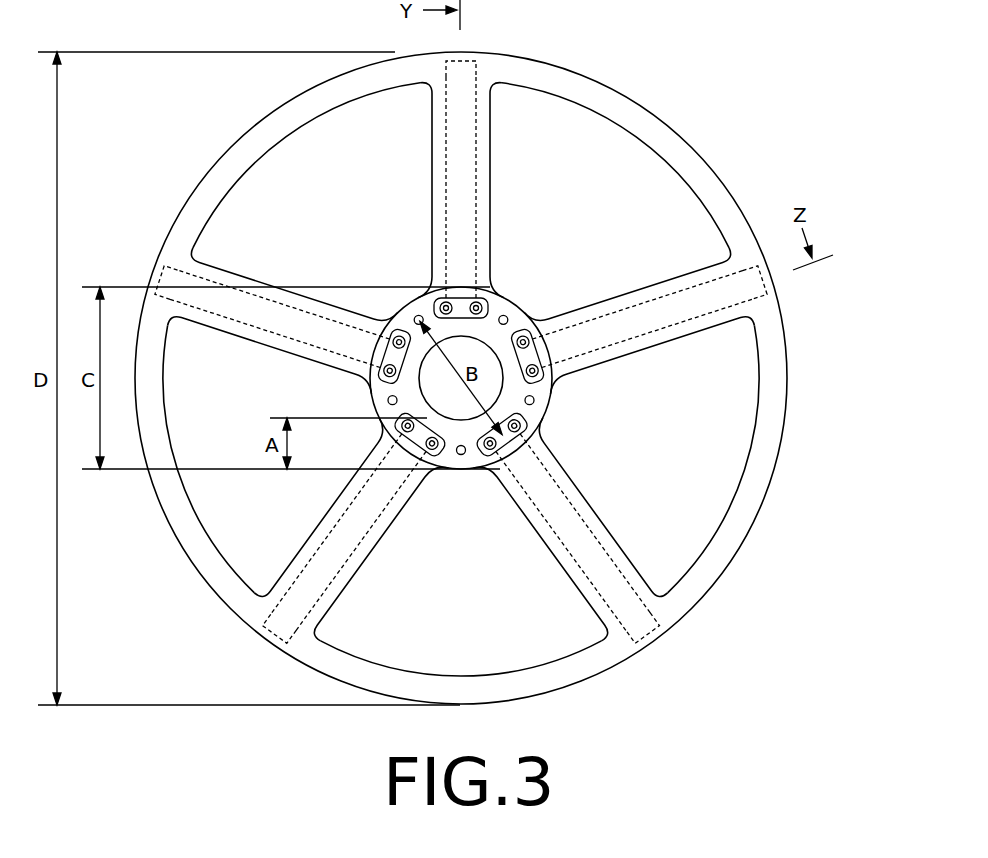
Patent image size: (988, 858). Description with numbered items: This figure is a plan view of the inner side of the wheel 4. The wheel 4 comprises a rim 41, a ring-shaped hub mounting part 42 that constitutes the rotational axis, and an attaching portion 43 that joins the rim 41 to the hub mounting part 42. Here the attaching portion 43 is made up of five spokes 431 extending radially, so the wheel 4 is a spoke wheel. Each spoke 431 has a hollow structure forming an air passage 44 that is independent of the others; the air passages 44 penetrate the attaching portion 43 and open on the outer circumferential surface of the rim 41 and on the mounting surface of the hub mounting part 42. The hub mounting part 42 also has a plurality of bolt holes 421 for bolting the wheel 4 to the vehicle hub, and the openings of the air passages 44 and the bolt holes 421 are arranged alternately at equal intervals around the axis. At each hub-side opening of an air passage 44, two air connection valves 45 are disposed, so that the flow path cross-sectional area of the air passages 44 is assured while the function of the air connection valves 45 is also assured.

The wheel 4 is at (461, 367).
The rim 41 is at (700, 175).
The hub mounting part 42 is at (528, 312).
The attaching portion 43 is at (410, 203).
The air passage 44 is at (275, 300).
The air connection valve 45 is at (445, 297).
The bolt hole 421 is at (415, 318).
The spoke 431 is at (431, 148).